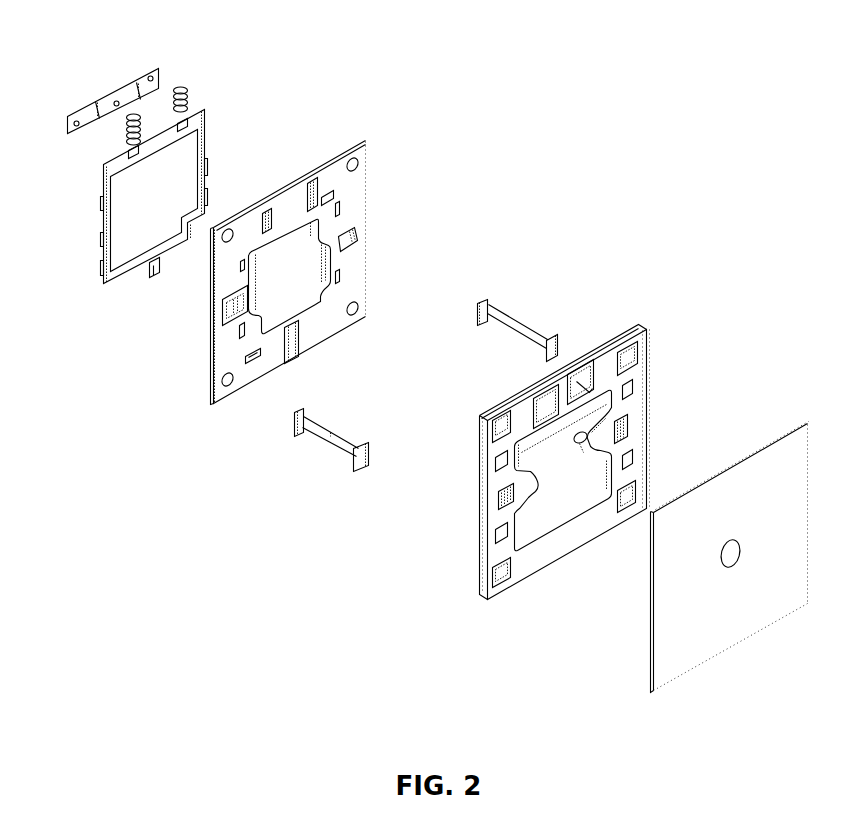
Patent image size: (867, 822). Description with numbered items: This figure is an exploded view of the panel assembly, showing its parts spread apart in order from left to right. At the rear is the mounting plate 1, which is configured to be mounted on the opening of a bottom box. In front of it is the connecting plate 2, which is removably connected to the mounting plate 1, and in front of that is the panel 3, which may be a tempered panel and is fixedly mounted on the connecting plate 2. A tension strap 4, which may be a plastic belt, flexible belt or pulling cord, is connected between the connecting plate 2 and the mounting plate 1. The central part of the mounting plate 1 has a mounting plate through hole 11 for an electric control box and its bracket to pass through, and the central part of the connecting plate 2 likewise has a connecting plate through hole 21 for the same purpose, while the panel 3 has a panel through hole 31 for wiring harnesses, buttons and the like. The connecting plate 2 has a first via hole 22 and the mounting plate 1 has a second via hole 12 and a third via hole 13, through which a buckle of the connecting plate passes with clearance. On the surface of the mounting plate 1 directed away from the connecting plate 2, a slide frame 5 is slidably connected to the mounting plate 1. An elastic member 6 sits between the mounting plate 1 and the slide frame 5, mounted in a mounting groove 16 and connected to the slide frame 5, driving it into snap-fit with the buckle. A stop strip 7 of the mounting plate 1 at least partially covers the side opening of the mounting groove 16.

The mounting plate 1 is at (208, 365).
The connecting plate 2 is at (478, 533).
The panel 3 is at (652, 640).
The tension strap 4 is at (320, 452).
The slide frame 5 is at (102, 215).
The elastic member 6 is at (188, 100).
The stop strip 7 is at (110, 93).
The mounting plate through hole 11 is at (295, 263).
The second via hole 12 is at (235, 308).
The third via hole 13 is at (328, 200).
The mounting groove 16 is at (267, 223).
The connecting plate through hole 21 is at (568, 460).
The first via hole 22 is at (620, 428).
The panel through hole 31 is at (727, 560).